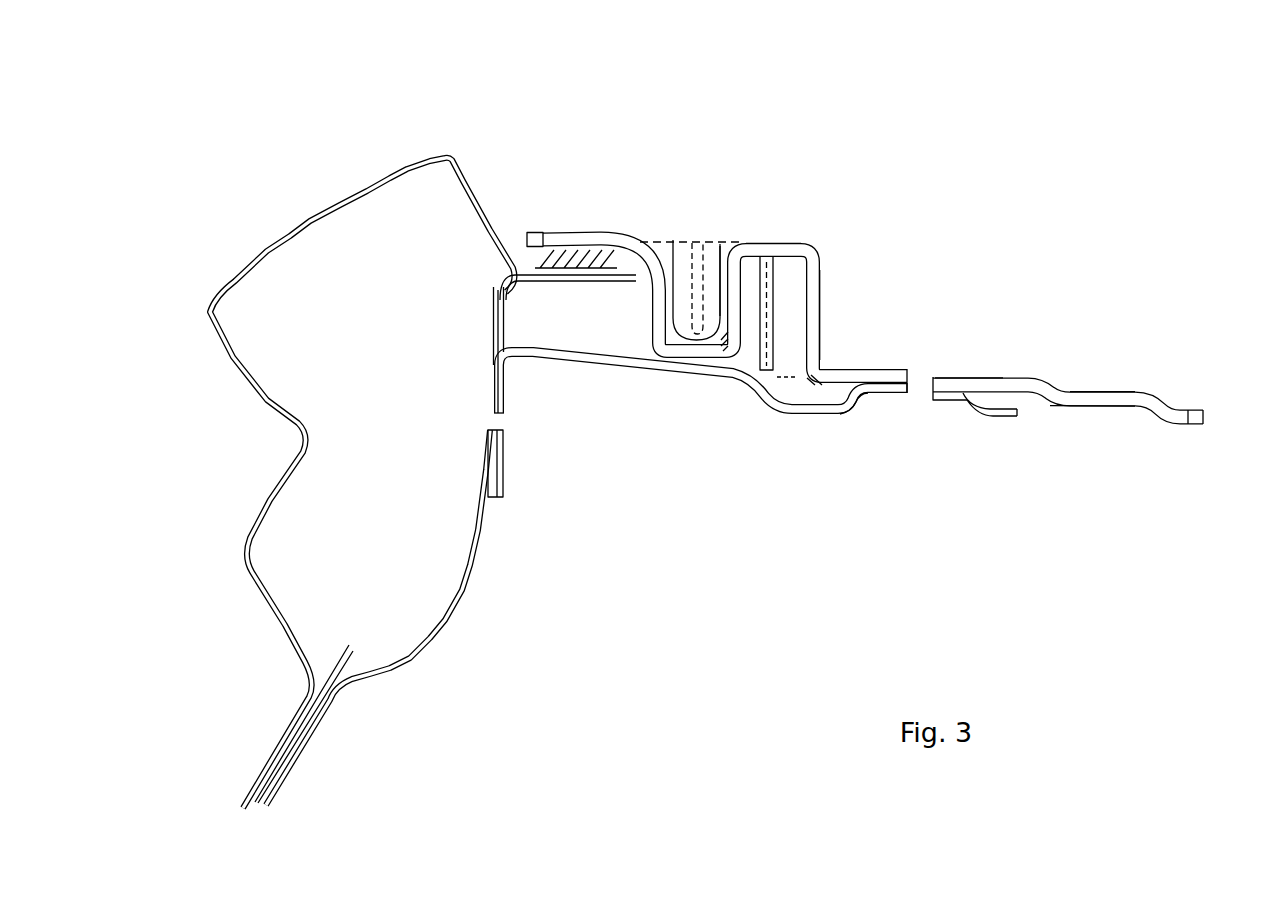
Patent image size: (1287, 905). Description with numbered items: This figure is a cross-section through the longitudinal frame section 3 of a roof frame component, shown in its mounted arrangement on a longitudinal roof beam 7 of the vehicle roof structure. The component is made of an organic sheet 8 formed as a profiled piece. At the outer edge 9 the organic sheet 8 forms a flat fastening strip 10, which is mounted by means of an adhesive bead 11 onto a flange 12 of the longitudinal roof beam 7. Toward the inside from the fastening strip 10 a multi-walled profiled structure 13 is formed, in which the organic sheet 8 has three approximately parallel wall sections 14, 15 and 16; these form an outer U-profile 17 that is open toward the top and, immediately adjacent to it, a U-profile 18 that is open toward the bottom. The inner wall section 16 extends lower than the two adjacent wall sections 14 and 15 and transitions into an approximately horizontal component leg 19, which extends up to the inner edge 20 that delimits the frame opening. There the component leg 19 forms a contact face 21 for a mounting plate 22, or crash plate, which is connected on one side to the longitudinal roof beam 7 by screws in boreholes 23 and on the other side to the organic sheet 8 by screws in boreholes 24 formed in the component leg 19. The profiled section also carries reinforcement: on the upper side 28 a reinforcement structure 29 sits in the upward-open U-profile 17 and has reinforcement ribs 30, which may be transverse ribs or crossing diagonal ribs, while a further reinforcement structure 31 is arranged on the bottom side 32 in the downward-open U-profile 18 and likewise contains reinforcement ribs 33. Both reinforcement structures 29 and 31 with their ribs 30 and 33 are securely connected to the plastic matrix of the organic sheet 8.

The longitudinal frame section 3 is at (1037, 366).
The longitudinal roof beam 7 is at (466, 603).
The organic sheet 8 is at (810, 255).
The outer edge 9 is at (531, 213).
The fastening strip 10 is at (577, 236).
The adhesive bead 11 is at (557, 258).
The flange 12 is at (592, 273).
The multi-walled profiled structure 13 is at (787, 226).
The wall section 14 is at (670, 277).
The wall section 15 is at (725, 282).
The inner wall section 16 is at (816, 318).
The outer U-profile 17 is at (710, 260).
The U-profile 18 is at (788, 318).
The component leg 19 is at (974, 383).
The inner edge 20 is at (1214, 381).
The contact face 21 is at (966, 404).
The mounting plate 22 is at (838, 410).
The boreholes 23 is at (493, 422).
The boreholes 24 is at (920, 392).
The upper side 28 is at (1123, 356).
The reinforcement structure 29 is at (689, 216).
The reinforcement ribs 30 is at (698, 306).
The reinforcement structure 31 is at (745, 388).
The bottom side 32 is at (1076, 432).
The reinforcement ribs 33 is at (767, 333).